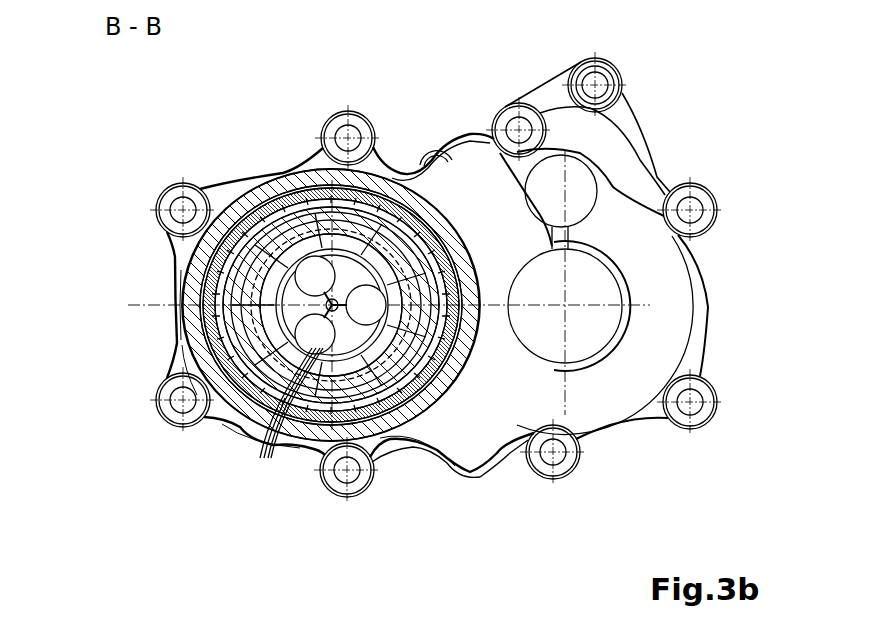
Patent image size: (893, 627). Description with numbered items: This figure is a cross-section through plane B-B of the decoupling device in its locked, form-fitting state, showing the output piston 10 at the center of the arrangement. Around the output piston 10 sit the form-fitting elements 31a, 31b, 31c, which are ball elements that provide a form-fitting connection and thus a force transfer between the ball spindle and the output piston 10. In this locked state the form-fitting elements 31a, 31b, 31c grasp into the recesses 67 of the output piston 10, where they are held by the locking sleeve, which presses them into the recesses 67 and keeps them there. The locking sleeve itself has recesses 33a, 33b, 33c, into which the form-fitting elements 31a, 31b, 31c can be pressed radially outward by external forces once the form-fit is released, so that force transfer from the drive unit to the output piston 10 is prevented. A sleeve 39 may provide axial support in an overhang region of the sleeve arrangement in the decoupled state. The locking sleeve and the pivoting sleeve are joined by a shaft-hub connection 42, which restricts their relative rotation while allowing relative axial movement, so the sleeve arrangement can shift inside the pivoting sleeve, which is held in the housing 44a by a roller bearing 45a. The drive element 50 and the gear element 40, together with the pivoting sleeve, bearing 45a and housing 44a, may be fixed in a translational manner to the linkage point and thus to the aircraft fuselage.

The output piston 10 is at (192, 257).
The form-fitting element 31a is at (410, 355).
The form-fitting element 31b is at (258, 407).
The form-fitting element 31c is at (351, 233).
The recess of locking sleeve 33a is at (412, 350).
The recess of locking sleeve 33b is at (309, 449).
The recess of locking sleeve 33c is at (158, 210).
The sleeve 39 is at (187, 353).
The gear element 40 is at (658, 265).
The shaft-hub connection 42 is at (187, 304).
The housing 44a is at (280, 184).
The roller bearing 45a is at (235, 170).
The drive element 50 is at (660, 137).
The recess of output piston 67 is at (287, 420).